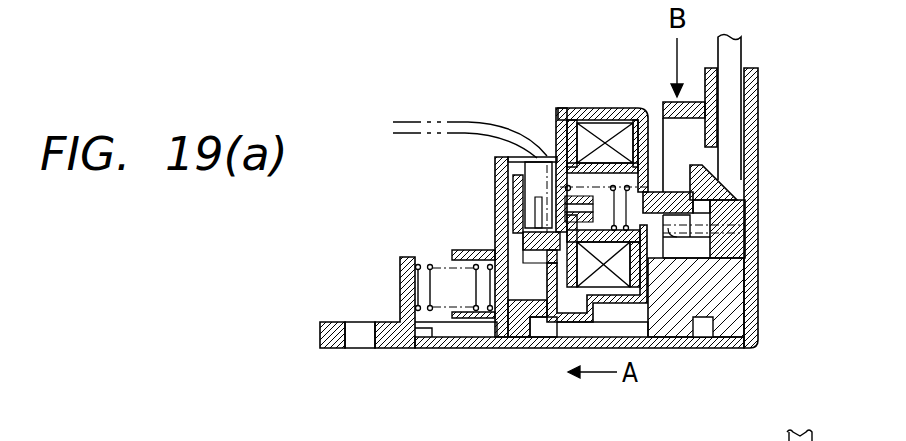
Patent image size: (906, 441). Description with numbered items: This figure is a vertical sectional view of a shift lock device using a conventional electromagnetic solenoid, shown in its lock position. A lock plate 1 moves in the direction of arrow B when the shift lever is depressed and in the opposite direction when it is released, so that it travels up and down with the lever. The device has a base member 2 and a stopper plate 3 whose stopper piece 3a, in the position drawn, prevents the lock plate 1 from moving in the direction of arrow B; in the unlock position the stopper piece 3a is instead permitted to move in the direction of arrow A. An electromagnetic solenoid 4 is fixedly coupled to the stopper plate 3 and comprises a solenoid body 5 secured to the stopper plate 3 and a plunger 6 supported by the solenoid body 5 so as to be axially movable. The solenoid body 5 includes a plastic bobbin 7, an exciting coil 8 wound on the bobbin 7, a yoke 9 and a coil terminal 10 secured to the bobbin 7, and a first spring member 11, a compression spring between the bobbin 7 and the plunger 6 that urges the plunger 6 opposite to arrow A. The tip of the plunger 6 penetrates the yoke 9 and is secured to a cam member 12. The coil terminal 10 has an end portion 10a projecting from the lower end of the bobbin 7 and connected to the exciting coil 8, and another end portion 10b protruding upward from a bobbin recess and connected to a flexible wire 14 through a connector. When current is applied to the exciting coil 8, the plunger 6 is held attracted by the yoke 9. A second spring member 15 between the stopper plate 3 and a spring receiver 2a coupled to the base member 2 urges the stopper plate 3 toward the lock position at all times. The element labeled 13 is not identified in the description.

The lock plate 1 is at (743, 50).
The base member 2 is at (758, 107).
The spring receiver 2a is at (383, 350).
The stopper plate 3 is at (700, 348).
The stopper piece 3a is at (732, 210).
The electromagnetic solenoid 4 is at (538, 128).
The solenoid body 5 is at (560, 130).
The plunger 6 is at (712, 243).
The plastic bobbin 7 is at (577, 110).
The exciting coil 8 is at (595, 110).
The yoke 9 is at (618, 110).
The coil terminal 10 is at (547, 263).
The end portion of coil terminal 10a is at (560, 300).
The end portion of coil terminal 10b is at (537, 210).
The first spring member 11 is at (627, 238).
The cam member 12 is at (730, 192).
The case 13 is at (497, 167).
The flexible wire 14 is at (417, 120).
The second spring member 15 is at (432, 313).